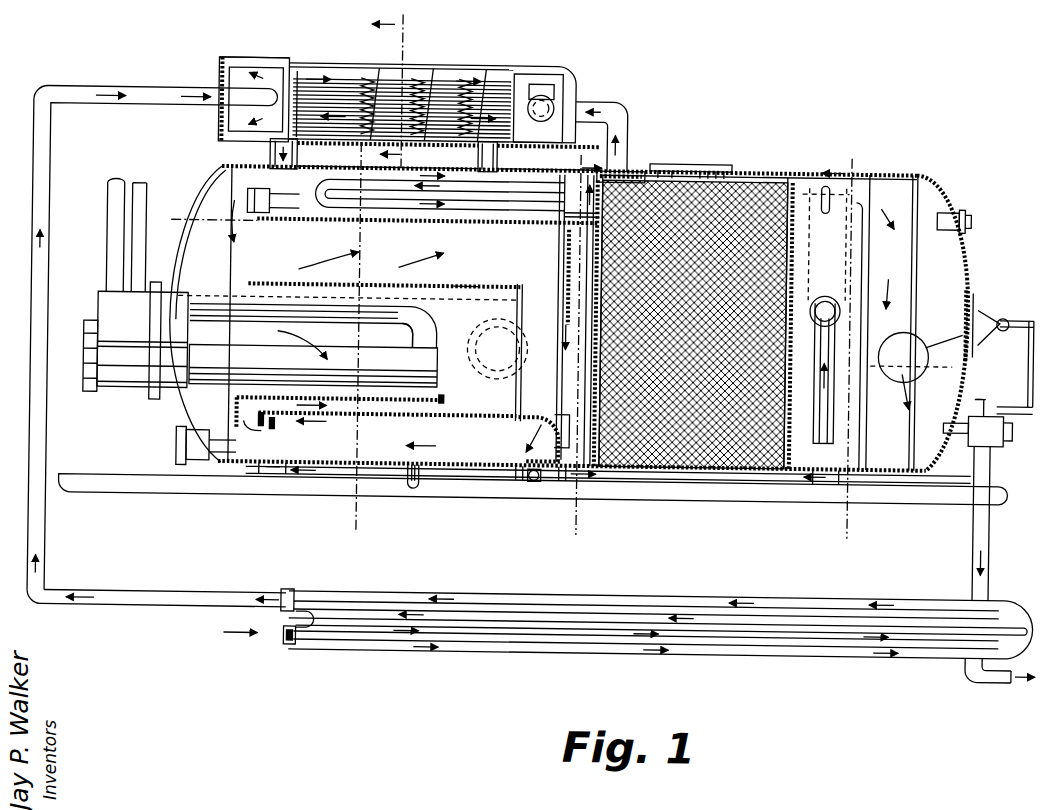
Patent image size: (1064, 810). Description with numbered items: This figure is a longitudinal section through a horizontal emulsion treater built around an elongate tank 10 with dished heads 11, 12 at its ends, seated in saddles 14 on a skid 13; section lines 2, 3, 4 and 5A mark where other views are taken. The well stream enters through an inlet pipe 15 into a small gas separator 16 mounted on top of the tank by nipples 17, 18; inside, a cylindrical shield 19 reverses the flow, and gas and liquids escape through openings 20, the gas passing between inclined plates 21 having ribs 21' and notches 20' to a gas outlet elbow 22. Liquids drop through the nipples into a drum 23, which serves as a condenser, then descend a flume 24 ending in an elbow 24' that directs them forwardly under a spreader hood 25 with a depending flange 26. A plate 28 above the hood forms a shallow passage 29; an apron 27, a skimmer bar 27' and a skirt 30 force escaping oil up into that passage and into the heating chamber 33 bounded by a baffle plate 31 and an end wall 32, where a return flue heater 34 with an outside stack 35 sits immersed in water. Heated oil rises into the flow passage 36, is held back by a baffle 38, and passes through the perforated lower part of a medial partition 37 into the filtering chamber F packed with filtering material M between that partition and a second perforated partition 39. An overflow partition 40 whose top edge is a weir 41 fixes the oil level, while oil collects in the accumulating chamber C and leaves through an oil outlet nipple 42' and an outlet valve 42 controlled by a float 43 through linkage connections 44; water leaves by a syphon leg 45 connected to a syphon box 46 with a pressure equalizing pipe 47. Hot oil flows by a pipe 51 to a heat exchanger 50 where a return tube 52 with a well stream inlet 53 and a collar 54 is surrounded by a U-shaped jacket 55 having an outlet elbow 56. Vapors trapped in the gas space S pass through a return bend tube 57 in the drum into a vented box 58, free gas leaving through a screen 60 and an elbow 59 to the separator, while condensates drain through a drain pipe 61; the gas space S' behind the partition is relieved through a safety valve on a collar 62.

The section line 2- 2 is at (372, 338).
The section line 3- 3 is at (578, 340).
The section line 4- 4 is at (844, 346).
The section line 5A is at (410, 88).
The tank 10 is at (424, 481).
The head 11 is at (210, 205).
The head 12 is at (940, 178).
The skid 13 is at (695, 496).
The saddles 14 is at (282, 468).
The inlet pipe 15 is at (70, 92).
The gas separator 16 is at (400, 70).
The nipple 17 is at (298, 155).
The nipple 18 is at (500, 153).
The cylindrical shield 19 is at (266, 76).
The openings 20 is at (241, 33).
The notches 20' is at (309, 73).
The plates 21 is at (415, 83).
The transverse ribs 21' is at (510, 75).
The gas outlet elbow 22 is at (555, 90).
The drum 23 is at (428, 226).
The flume 24 is at (504, 337).
The elbow 24' is at (608, 506).
The spreader hood 25 is at (445, 416).
The depending flange 26 is at (527, 460).
The apron 27 is at (186, 444).
The skimmer bar 27' is at (308, 435).
The horizontal plate 28 is at (318, 395).
The passage 29 is at (398, 435).
The skirt 30 is at (266, 426).
The baffle plate 31 is at (459, 292).
The end wall 32 is at (458, 404).
The heating chamber 33 is at (337, 302).
The heater 34 is at (205, 372).
The stack 35 is at (108, 212).
The flow passage 36 is at (248, 246).
The medial partition 37 is at (556, 402).
The baffle 38 is at (575, 312).
The perforated partition 39 is at (436, 342).
The overflow partition 40 is at (880, 275).
The weir 41 is at (868, 218).
The outlet valve 42 is at (996, 425).
The oil outlet nipple 42' is at (999, 367).
The float 43 is at (908, 330).
The linkage connections 44 is at (1037, 340).
The syphon leg 45 is at (830, 418).
The syphon box 46 is at (873, 195).
The pressure equalizing pipe 47 is at (822, 178).
The heat exchanger 50 is at (610, 592).
The pipe 51 is at (700, 150).
The return tube 52 is at (553, 640).
The well stream inlet 53 is at (300, 642).
The collar 54 is at (300, 592).
The U-shaped jacket 55 is at (800, 592).
The outlet elbow 56 is at (982, 665).
The return bend tube 57 is at (402, 165).
The vented box 58 is at (575, 295).
The elbow 59 is at (628, 108).
The screen 60 is at (630, 165).
The drain pipe 61 is at (590, 322).
The collar 62 is at (973, 212).
The gas space S is at (192, 219).
The gas space S' is at (759, 149).
The accumulating chamber C is at (966, 258).
The filtering material M is at (758, 458).
The filtering chamber F is at (688, 492).